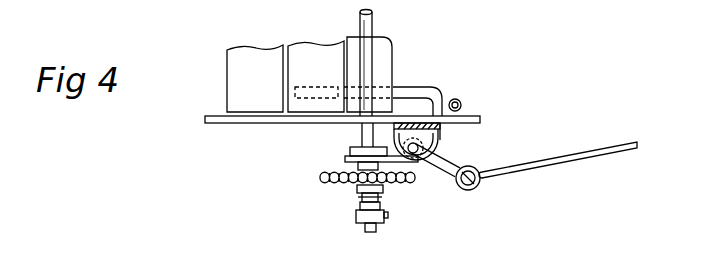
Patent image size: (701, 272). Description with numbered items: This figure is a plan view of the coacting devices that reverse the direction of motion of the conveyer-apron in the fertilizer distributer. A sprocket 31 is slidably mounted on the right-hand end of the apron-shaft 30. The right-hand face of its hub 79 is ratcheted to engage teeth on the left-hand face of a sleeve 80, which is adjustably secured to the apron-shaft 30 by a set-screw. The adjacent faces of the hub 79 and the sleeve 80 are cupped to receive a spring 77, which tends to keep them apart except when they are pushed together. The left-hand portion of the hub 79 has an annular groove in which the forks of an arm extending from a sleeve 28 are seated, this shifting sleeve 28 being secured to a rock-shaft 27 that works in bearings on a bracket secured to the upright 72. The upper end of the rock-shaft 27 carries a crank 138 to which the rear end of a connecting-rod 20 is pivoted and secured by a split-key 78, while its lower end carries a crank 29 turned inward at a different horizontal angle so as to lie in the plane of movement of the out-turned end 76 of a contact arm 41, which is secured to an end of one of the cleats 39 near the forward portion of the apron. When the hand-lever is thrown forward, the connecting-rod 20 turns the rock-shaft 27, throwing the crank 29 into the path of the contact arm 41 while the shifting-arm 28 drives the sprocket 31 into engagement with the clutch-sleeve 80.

The connecting-rod 20 is at (518, 167).
The rock-shaft 27 is at (422, 148).
The sleeve 28 is at (345, 160).
The crank 29 is at (441, 124).
The apron-shaft 30 is at (367, 47).
The sprocket 31 is at (320, 178).
The cleats 39 is at (318, 62).
The contact arm 41 is at (403, 92).
The upright 72 is at (441, 128).
The out-turned end 76 is at (450, 100).
The spring 77 is at (379, 196).
The split-key 78 is at (461, 184).
The hub 79 is at (350, 150).
The sleeve 80 is at (362, 211).
The crank 138 is at (476, 178).